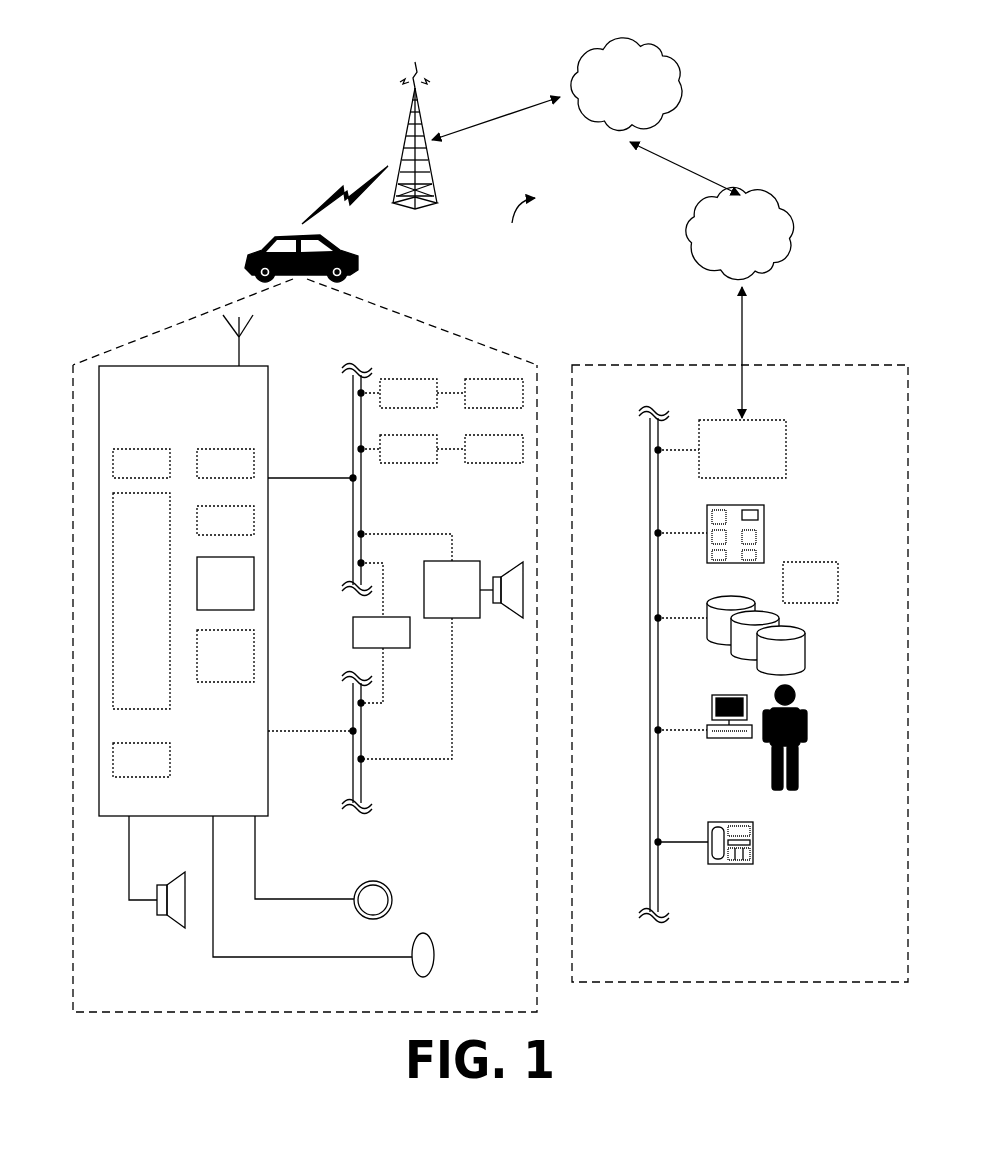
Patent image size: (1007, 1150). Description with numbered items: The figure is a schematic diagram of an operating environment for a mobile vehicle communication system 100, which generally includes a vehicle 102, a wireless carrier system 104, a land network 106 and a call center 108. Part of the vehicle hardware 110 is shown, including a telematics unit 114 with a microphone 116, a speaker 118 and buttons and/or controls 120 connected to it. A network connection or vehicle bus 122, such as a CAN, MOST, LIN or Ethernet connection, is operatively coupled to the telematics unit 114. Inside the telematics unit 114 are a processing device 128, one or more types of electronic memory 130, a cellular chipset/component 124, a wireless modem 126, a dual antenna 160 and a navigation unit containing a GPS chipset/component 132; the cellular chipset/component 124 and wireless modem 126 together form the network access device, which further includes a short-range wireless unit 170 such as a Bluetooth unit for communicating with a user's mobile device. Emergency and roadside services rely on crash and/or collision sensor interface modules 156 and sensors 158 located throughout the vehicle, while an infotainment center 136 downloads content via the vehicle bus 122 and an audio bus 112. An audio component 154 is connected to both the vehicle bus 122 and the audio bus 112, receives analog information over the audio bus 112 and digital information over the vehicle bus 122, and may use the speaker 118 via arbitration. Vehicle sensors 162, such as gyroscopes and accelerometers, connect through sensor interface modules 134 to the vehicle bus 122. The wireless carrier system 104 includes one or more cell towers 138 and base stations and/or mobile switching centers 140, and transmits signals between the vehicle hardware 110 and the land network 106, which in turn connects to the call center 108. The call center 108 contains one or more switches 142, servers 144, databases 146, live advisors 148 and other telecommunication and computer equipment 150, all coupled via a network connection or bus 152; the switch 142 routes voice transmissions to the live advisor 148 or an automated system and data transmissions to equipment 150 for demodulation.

The communication system 100 is at (433, 27).
The vehicle 102 is at (253, 250).
The wireless carrier system 104 is at (515, 226).
The land network 106 is at (740, 233).
The call center 108 is at (743, 982).
The vehicle hardware 110 is at (270, 1012).
The audio bus 112 is at (353, 780).
The telematics unit 114 is at (210, 591).
The microphone 116 is at (428, 935).
The speaker 118 is at (165, 922).
The buttons and/or controls 120 is at (372, 882).
The vehicle bus 122 is at (363, 520).
The cellular chipset/component 124 is at (141, 463).
The wireless modem 126 is at (225, 463).
The processing device 128 is at (141, 601).
The electronic memory 130 is at (141, 760).
The GPS chipset/component 132 is at (225, 520).
The sensor interface modules 134 is at (408, 449).
The infotainment center 136 is at (381, 632).
The cell towers 138 is at (420, 115).
The mobile switching centers 140 is at (626, 84).
The switch 142 is at (742, 449).
The servers 144 is at (762, 510).
The databases 146 is at (805, 633).
The live advisors 148 is at (800, 705).
The telecommunication and computer equipment 150 is at (755, 835).
The network connection or bus 152 is at (650, 670).
The audio component 154 is at (473, 589).
The crash and/or collision sensor interface modules 156 is at (408, 393).
The sensors 158 is at (494, 393).
The dual antenna 160 is at (242, 360).
The vehicle sensors 162 is at (494, 449).
The short-range wireless unit 170 is at (225, 583).